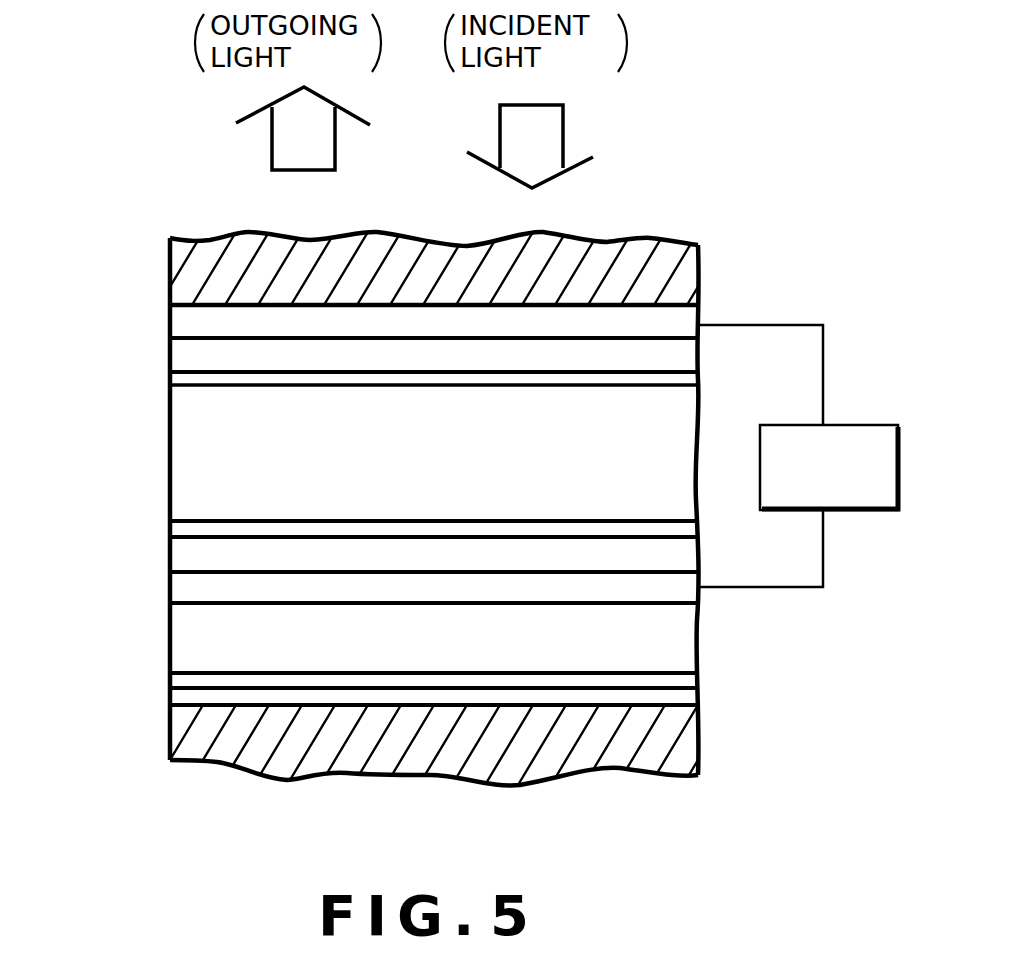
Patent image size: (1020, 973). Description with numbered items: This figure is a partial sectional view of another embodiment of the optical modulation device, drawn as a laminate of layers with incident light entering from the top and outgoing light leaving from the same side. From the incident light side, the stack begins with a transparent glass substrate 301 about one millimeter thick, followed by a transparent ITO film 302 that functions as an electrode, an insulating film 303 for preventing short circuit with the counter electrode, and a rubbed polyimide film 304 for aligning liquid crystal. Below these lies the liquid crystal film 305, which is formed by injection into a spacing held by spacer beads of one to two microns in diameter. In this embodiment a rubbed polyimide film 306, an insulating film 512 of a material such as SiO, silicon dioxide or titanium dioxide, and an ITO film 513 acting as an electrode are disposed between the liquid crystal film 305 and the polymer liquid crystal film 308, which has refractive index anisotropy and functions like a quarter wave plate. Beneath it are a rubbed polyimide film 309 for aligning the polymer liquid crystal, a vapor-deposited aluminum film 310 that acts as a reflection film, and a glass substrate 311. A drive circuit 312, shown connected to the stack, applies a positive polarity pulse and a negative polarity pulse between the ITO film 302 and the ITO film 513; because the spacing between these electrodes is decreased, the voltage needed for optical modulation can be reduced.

The transparent glass substrate 301 is at (170, 272).
The transparent ITO film 302 is at (170, 318).
The insulating film 303 is at (170, 355).
The rubbed polyimide film 304 is at (170, 385).
The liquid crystal film 305 is at (170, 470).
The rubbed polyimide film 306 is at (170, 528).
The insulating film 512 is at (170, 557).
The ITO film 513 is at (170, 593).
The polymer liquid crystal film 308 is at (170, 636).
The rubbed polyimide film 309 is at (170, 678).
The vapor-deposited aluminum film 310 is at (170, 697).
The glass substrate 311 is at (170, 748).
The drive circuit 312 is at (852, 512).